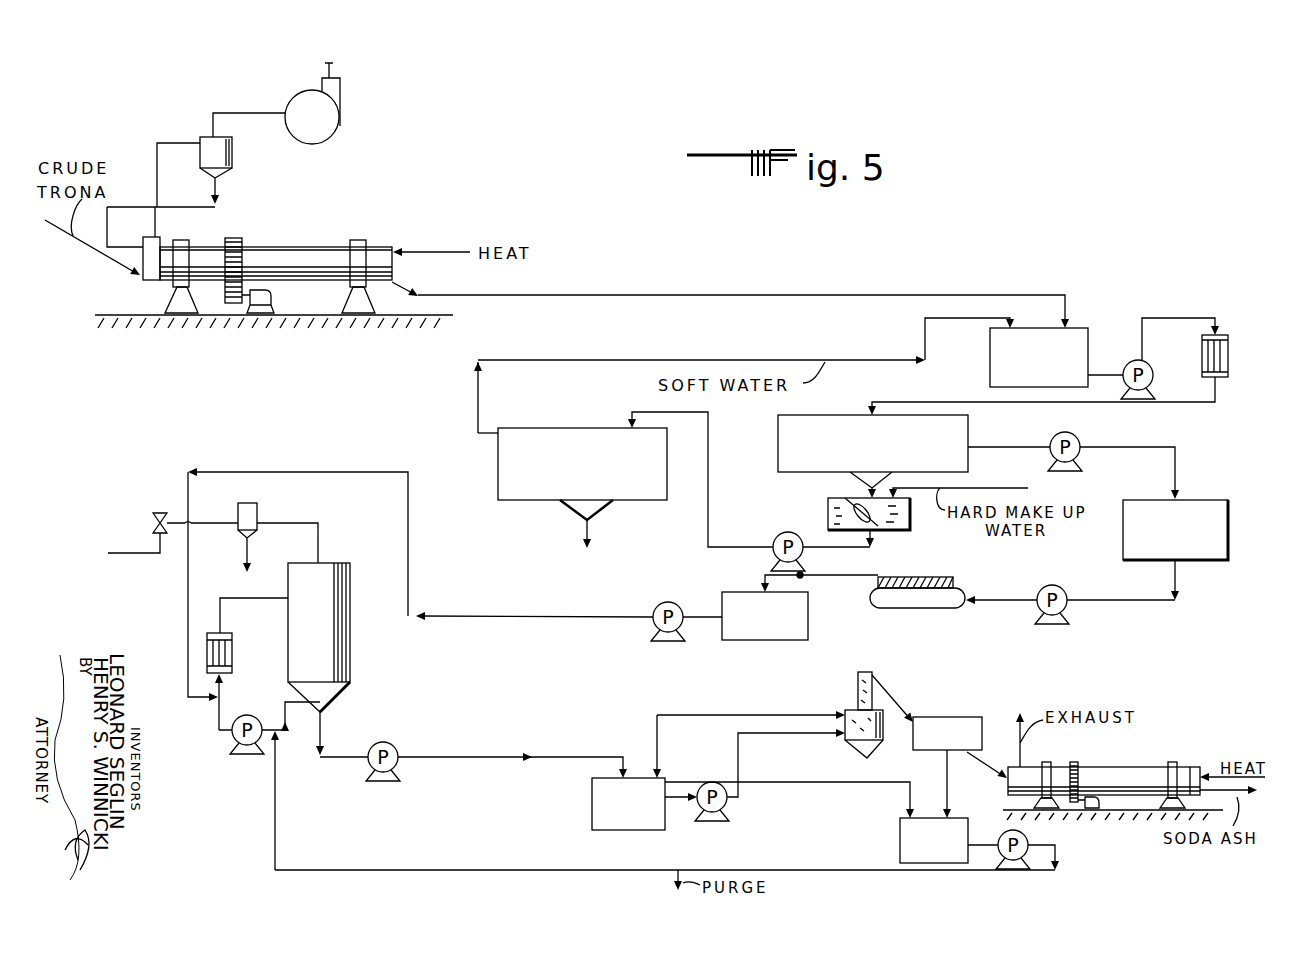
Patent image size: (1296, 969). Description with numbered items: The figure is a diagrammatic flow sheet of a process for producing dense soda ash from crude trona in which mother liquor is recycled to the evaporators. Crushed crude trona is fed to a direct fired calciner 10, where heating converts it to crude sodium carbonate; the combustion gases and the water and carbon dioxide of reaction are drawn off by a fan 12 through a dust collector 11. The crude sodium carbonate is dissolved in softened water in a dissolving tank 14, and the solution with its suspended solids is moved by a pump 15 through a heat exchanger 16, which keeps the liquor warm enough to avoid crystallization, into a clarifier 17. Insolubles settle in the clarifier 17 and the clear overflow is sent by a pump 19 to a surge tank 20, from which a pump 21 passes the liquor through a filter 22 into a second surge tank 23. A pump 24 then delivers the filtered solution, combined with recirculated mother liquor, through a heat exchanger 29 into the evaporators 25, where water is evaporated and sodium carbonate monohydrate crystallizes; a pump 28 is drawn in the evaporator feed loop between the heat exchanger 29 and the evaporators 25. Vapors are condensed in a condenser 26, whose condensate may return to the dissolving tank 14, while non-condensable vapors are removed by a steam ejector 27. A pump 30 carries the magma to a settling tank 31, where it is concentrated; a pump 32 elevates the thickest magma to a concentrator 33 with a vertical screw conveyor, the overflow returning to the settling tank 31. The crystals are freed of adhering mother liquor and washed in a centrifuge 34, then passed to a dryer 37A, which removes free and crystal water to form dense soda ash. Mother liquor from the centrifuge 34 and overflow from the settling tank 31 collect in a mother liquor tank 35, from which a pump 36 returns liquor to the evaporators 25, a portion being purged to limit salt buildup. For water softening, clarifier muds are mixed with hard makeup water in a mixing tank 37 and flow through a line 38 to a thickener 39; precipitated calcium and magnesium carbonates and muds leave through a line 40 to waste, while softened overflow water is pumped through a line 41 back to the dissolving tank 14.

The calciner 10 is at (285, 247).
The dust collector 11 is at (225, 147).
The fan 12 is at (323, 112).
The dissolving tank 14 is at (993, 358).
The pump 15 is at (1148, 362).
The heat exchanger 16 is at (1230, 353).
The clarifier 17 is at (970, 428).
The pump 19 is at (1068, 432).
The surge tank 20 is at (1217, 528).
The pump 21 is at (1090, 577).
The filter 22 is at (910, 600).
The surge tank 23 is at (777, 632).
The pump 24 is at (698, 588).
The evaporators 25 is at (337, 642).
The condenser 26 is at (258, 512).
The steam ejector 27 is at (153, 520).
The pump 28 is at (260, 701).
The heat exchanger 29 is at (232, 652).
The pump 30 is at (398, 745).
The settling tank 31 is at (592, 818).
The pump 32 is at (718, 826).
The concentrator 33 is at (883, 737).
The centrifuge 34 is at (972, 688).
The mother liquor tank 35 is at (910, 833).
The pump 36 is at (1007, 837).
The mixing tank 37 is at (910, 520).
The dryer 37A is at (1133, 778).
The line 38 is at (708, 458).
The thickener 39 is at (498, 462).
The line 40 is at (587, 522).
The line 41 is at (773, 360).